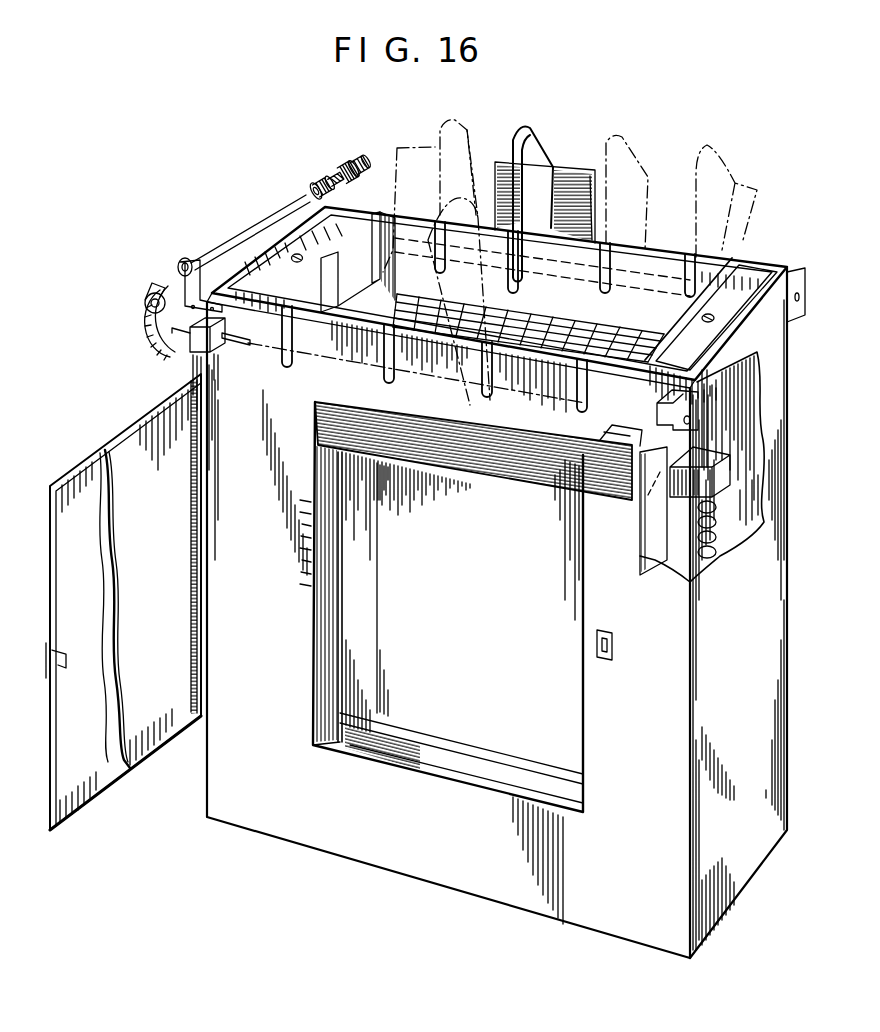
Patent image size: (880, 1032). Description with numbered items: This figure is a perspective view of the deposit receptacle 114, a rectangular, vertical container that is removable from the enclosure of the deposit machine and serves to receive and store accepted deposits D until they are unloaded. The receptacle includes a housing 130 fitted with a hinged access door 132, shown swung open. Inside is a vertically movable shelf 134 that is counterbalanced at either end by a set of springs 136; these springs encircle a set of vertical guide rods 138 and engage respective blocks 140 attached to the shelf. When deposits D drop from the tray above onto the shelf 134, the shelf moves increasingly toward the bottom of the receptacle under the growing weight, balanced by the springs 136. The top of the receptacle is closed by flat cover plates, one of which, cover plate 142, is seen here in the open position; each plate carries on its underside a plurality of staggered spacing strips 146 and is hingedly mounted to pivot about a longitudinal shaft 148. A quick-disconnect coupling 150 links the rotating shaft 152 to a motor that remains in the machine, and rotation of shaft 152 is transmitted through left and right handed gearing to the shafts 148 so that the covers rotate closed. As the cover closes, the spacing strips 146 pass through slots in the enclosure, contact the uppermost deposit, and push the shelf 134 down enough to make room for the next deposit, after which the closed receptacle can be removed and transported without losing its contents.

The deposit receptacle 114 is at (349, 872).
The housing 130 is at (640, 711).
The hinged access door 132 is at (142, 457).
The vertically movable shelf 134 is at (495, 482).
The springs 136 is at (722, 533).
The vertical guide rods 138 is at (756, 355).
The blocks 140 is at (688, 487).
The flat cover plate 142 is at (572, 167).
The spacing strips 146 is at (527, 134).
The longitudinal shaft 148 is at (233, 345).
The coupling 150 is at (363, 150).
The rotating shaft 152 is at (247, 238).
The deposits D is at (573, 337).